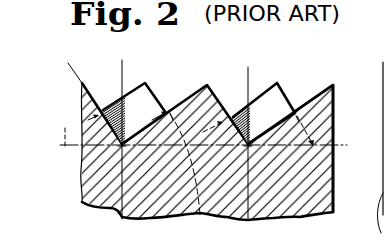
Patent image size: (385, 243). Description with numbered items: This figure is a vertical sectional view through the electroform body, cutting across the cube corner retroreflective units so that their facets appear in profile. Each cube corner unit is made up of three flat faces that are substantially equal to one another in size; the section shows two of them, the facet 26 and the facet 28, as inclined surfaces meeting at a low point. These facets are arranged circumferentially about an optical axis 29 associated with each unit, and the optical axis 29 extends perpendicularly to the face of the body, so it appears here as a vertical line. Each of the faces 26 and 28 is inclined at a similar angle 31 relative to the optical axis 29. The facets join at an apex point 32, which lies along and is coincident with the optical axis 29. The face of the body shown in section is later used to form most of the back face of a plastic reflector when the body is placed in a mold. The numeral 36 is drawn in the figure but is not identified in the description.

The facet 26 is at (277, 105).
The facet 28 is at (228, 98).
The optical axis 29 is at (123, 80).
The angle 31 is at (120, 64).
The apex point 32 is at (117, 151).
The pitch reference line 36 is at (65, 131).